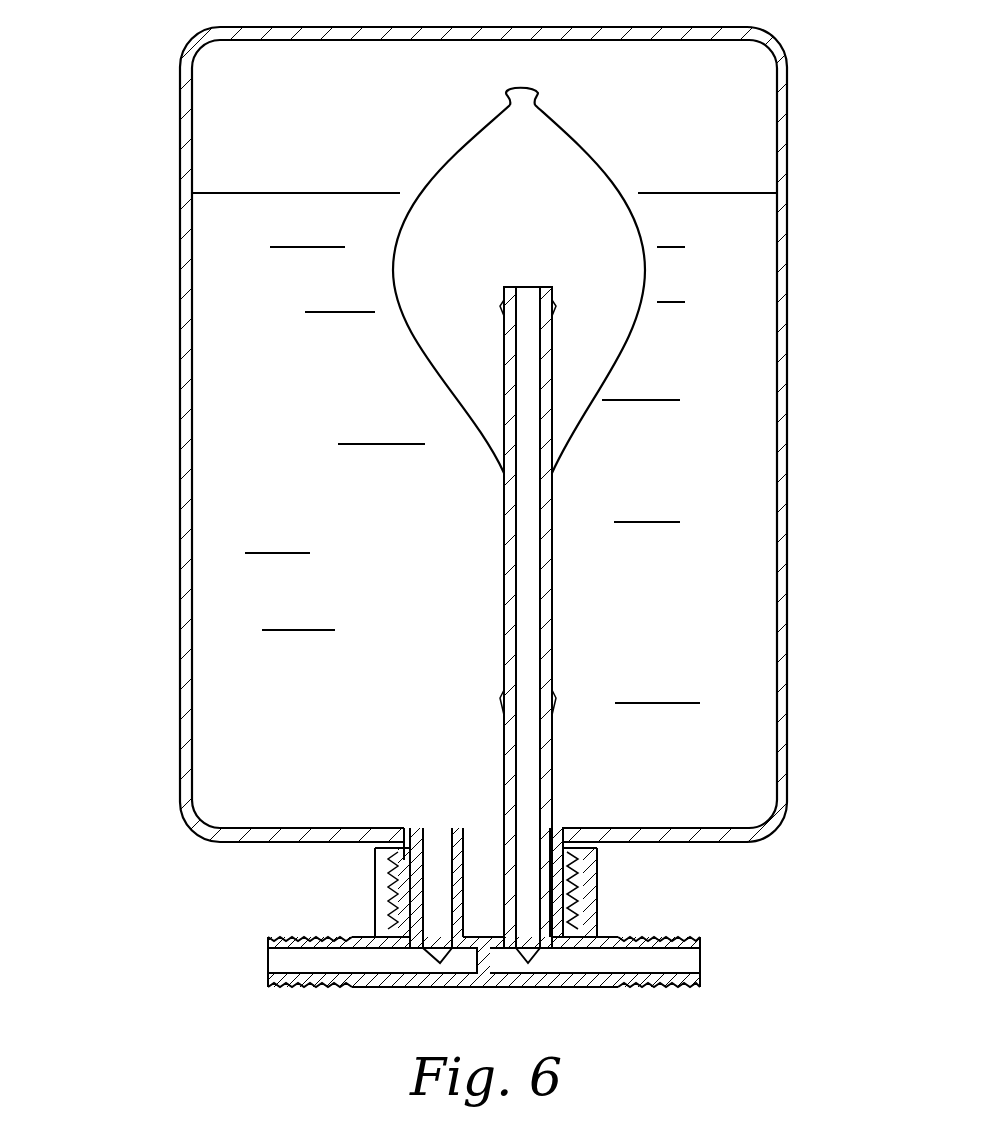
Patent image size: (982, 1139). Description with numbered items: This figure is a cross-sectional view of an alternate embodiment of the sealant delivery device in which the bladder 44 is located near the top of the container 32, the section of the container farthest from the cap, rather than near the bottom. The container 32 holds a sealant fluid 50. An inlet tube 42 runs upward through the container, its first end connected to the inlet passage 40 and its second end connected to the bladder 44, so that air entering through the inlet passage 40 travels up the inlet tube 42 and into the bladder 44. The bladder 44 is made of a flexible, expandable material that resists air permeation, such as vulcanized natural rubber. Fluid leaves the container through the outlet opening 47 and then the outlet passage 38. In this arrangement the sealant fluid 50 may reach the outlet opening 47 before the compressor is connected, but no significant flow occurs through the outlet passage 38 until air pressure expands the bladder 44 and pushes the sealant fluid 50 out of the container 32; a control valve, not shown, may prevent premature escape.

The container 32 is at (262, 130).
The sealant fluid 50 is at (720, 341).
The bladder 44 is at (565, 168).
The inlet tube 42 is at (548, 588).
The outlet opening 47 is at (435, 842).
The outlet passage 38 is at (323, 958).
The inlet passage 40 is at (657, 963).